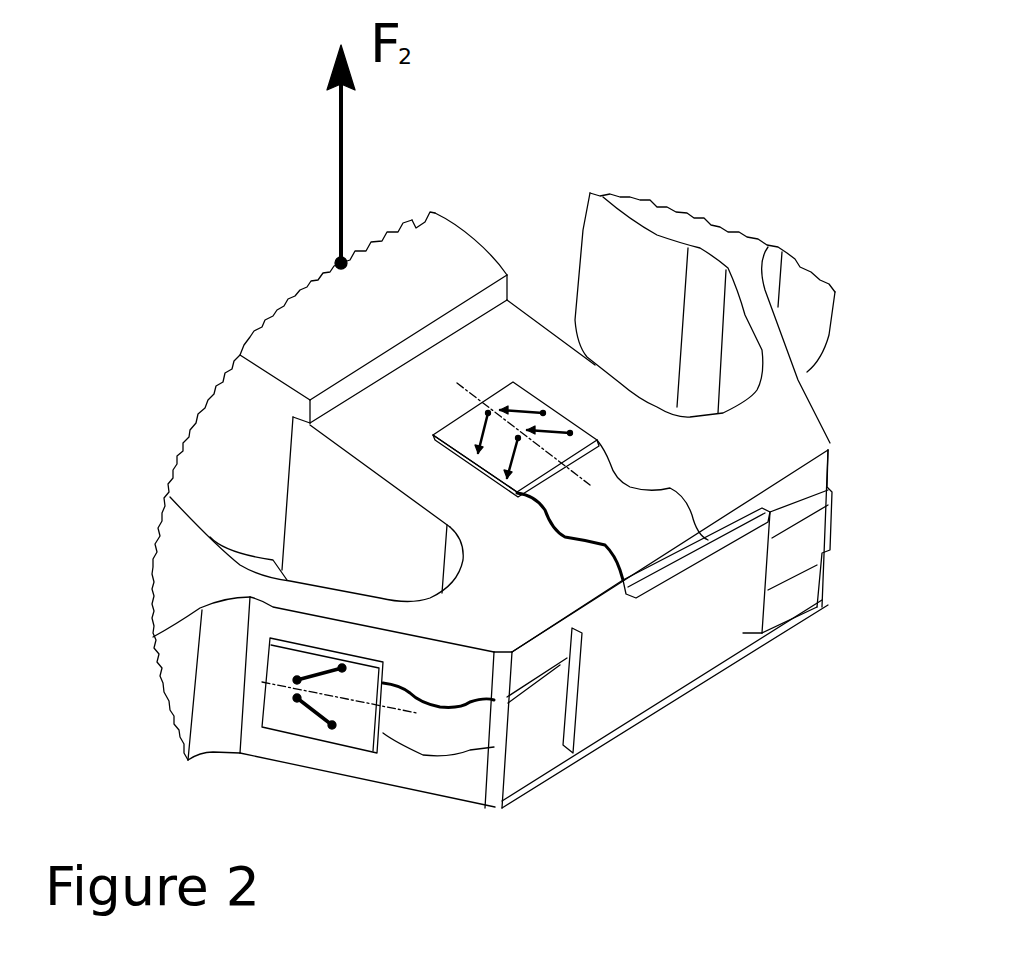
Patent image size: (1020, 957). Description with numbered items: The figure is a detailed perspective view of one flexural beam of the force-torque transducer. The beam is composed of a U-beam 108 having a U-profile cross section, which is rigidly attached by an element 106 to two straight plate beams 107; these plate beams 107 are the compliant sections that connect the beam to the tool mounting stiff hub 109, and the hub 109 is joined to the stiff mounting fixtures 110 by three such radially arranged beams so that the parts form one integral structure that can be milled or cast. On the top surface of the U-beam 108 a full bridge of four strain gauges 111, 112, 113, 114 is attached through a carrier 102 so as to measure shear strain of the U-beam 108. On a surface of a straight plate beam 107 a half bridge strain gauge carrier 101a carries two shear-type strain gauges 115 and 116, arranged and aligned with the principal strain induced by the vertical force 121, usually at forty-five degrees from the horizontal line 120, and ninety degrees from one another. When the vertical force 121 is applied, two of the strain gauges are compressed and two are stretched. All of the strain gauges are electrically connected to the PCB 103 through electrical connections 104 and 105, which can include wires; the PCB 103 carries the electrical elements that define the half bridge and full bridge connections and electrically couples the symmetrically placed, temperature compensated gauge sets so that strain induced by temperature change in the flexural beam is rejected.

The half bridge strain gauge carrier 101a is at (282, 718).
The carrier 102 is at (445, 435).
The PCB 103 is at (743, 633).
The electrical connection 104 is at (810, 548).
The electrical connection 105 is at (650, 520).
The element 106 is at (747, 452).
The straight plate beam 107 is at (773, 343).
The U-beam 108 is at (535, 380).
The tool mounting stiff hub 109 is at (427, 270).
The stiff mounting fixture 110 is at (667, 223).
The strain gauge 111 is at (508, 478).
The strain gauge 112 is at (487, 452).
The strain gauge 113 is at (547, 430).
The strain gauge 114 is at (520, 410).
The strain gauge 115 is at (317, 717).
The strain gauge 116 is at (312, 673).
The horizontal line 120 is at (252, 678).
The vertical force F2 121 is at (341, 205).